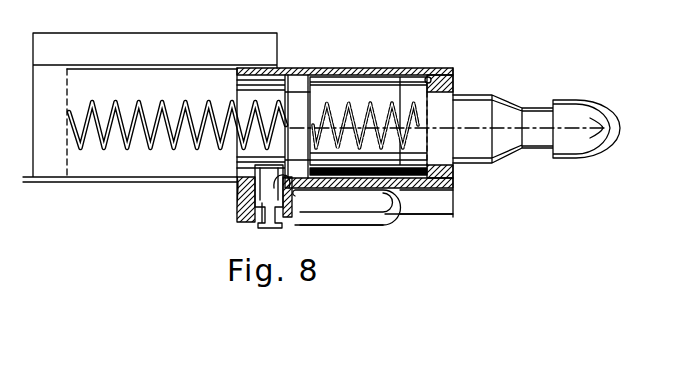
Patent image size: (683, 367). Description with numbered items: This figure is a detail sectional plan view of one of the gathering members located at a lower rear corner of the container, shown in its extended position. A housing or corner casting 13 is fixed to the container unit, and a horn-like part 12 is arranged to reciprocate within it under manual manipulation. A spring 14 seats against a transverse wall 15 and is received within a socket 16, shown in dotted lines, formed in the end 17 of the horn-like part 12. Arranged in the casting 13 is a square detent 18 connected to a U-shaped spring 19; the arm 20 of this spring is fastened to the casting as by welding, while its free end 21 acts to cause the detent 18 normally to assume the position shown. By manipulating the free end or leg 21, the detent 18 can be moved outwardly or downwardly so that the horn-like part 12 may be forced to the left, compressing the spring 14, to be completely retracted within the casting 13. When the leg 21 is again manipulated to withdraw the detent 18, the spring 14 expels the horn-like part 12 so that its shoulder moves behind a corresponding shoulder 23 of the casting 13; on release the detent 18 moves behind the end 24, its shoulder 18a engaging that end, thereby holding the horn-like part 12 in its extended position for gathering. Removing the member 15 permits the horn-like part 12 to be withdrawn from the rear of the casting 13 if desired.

The horn-like part 12 is at (482, 94).
The housing or corner casting 13 is at (358, 71).
The spring 14 is at (168, 150).
The transverse wall 15 is at (62, 150).
The socket 16 is at (336, 106).
The end 17 is at (383, 90).
The detent 18 is at (237, 208).
The shoulder 18a is at (277, 180).
The U-shaped spring 19 is at (373, 230).
The arm 20 is at (400, 208).
The free end 21 is at (335, 226).
The shoulder 23 is at (429, 82).
The end 24 is at (288, 82).